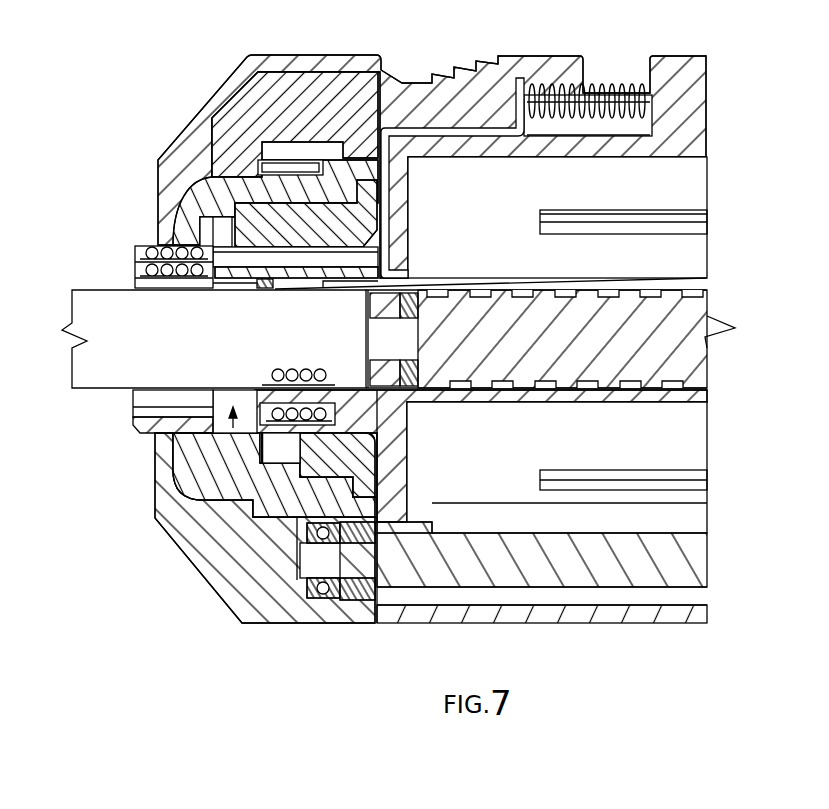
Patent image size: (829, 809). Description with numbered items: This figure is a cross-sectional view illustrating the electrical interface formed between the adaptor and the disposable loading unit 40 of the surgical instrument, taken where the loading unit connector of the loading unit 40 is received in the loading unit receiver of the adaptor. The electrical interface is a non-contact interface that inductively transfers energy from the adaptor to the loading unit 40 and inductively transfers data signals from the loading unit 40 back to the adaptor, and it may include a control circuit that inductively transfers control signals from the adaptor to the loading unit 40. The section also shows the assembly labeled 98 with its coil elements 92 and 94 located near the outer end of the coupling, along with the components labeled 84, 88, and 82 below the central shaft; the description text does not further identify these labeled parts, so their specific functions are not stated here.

The disposable loading unit 40 is at (297, 292).
The first spring 92 is at (141, 247).
The second spring 94 is at (150, 276).
The seal assembly 98 is at (130, 253).
The spring 84 is at (272, 368).
The flow passage 88 is at (228, 432).
The spring 82 is at (278, 432).